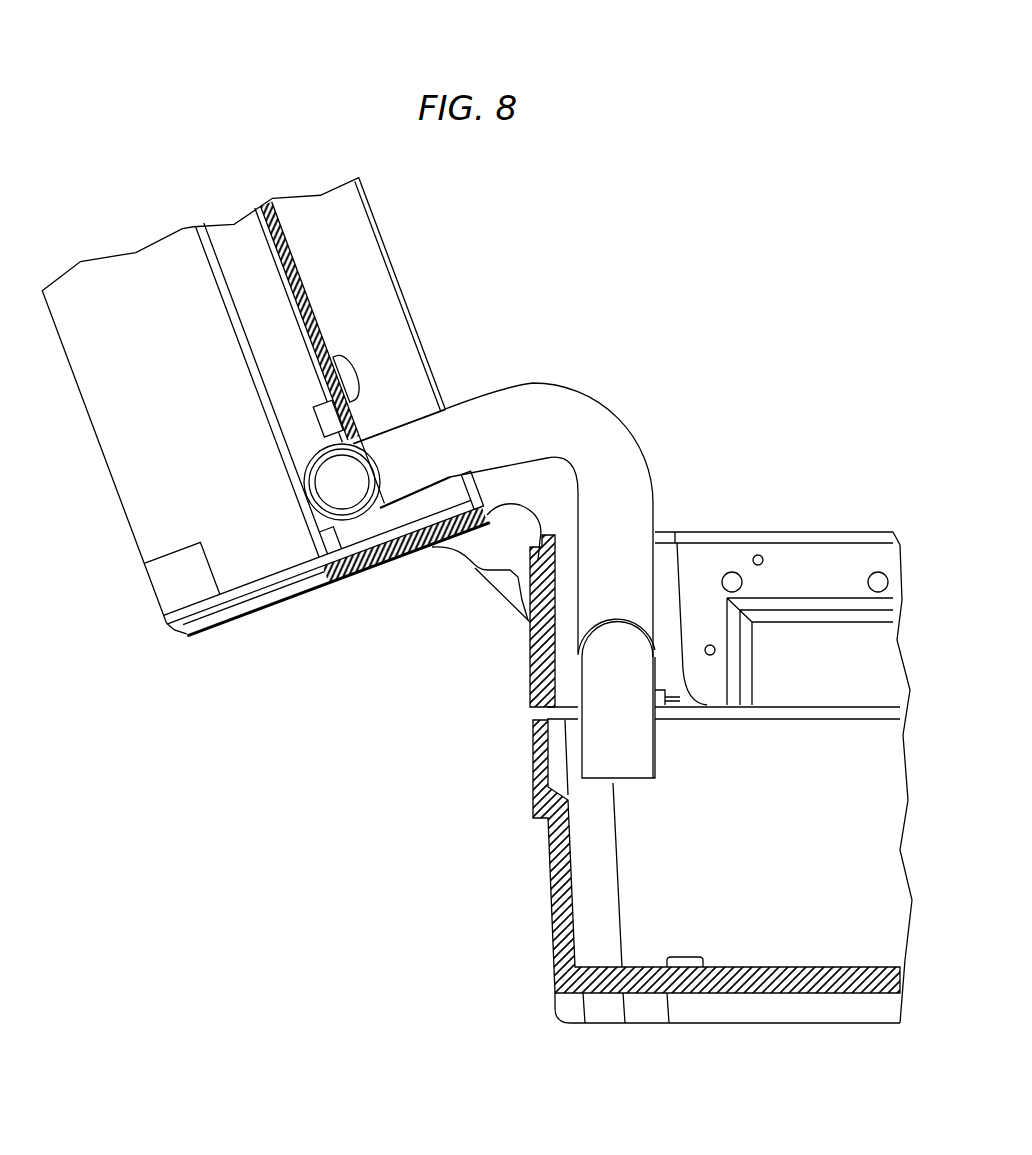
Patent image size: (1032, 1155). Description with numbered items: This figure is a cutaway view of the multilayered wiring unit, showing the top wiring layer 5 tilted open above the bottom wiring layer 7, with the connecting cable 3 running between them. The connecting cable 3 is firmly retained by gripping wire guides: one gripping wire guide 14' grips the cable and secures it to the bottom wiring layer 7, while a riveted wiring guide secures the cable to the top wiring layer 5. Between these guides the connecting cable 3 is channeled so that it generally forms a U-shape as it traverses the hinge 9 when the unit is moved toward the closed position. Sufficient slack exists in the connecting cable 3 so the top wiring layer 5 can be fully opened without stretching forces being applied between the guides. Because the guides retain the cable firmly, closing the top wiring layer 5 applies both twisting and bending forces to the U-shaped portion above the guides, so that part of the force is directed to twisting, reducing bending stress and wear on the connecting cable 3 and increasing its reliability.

The connecting cable 3 is at (568, 405).
The top wiring layer 5 is at (262, 598).
The bottom wiring layer 7 is at (548, 925).
The hinge 9 is at (487, 562).
The gripping wire guide 14' is at (616, 651).